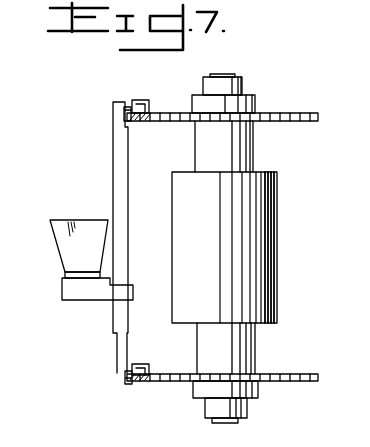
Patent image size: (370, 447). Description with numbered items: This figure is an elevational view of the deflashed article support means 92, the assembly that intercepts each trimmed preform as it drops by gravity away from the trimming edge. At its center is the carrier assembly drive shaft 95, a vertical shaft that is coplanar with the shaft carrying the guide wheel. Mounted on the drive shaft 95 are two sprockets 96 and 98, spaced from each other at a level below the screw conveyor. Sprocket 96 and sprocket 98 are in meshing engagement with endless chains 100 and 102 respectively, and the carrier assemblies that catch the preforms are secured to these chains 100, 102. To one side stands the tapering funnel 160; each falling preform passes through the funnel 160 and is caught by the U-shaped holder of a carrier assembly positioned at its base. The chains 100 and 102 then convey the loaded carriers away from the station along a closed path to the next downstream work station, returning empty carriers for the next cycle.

The deflashed article support means 92 is at (340, 250).
The carrier assembly drive shaft 95 is at (257, 96).
The sprocket 96 is at (287, 113).
The sprocket 98 is at (183, 382).
The endless chain 100 is at (127, 124).
The endless chain 102 is at (127, 376).
The tapering funnel 160 is at (51, 228).